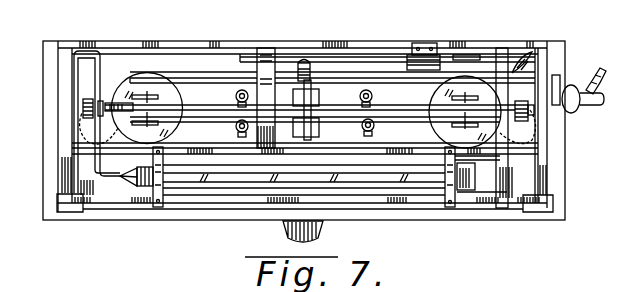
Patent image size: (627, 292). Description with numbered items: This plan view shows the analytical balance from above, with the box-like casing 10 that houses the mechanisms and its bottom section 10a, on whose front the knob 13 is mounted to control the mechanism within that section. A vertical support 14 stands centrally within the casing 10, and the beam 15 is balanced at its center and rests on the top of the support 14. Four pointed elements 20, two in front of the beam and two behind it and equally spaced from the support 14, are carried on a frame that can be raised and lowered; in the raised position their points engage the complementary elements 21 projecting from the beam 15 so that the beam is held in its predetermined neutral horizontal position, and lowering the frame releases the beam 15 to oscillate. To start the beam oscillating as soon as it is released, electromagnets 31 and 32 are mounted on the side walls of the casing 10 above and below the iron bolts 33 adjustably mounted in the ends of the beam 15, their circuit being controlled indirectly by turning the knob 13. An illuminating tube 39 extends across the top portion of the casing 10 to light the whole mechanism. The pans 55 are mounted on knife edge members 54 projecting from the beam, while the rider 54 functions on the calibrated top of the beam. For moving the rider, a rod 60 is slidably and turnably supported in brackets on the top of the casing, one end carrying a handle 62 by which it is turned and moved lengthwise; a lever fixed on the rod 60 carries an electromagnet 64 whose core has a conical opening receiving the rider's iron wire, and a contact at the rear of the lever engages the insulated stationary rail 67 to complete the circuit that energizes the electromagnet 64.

The casing 10 is at (47, 123).
The bottom section 10a is at (137, 214).
The knob 13 is at (325, 226).
The vertical support 14 is at (319, 95).
The beam 15 is at (432, 117).
The pointed elements 20 is at (234, 97).
The complementary elements 21 is at (234, 78).
The electromagnet 31 is at (88, 99).
The electromagnet 32 is at (522, 104).
The iron bolts 33 is at (114, 103).
The illuminating tube 39 is at (218, 178).
The rider 54 is at (147, 95).
The pans 55 is at (118, 128).
The rod 60 is at (363, 80).
The handle 62 is at (590, 108).
The electromagnet 64 is at (301, 63).
The rail 67 is at (345, 57).